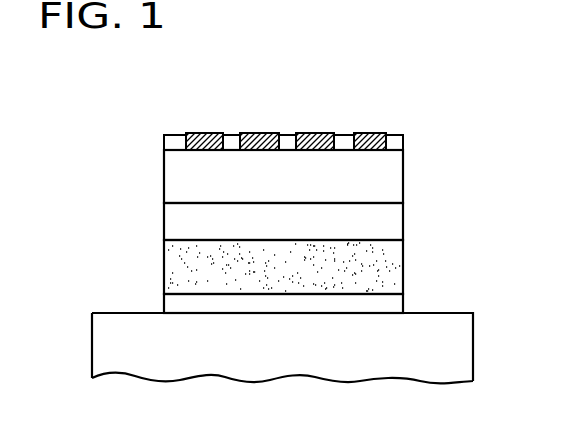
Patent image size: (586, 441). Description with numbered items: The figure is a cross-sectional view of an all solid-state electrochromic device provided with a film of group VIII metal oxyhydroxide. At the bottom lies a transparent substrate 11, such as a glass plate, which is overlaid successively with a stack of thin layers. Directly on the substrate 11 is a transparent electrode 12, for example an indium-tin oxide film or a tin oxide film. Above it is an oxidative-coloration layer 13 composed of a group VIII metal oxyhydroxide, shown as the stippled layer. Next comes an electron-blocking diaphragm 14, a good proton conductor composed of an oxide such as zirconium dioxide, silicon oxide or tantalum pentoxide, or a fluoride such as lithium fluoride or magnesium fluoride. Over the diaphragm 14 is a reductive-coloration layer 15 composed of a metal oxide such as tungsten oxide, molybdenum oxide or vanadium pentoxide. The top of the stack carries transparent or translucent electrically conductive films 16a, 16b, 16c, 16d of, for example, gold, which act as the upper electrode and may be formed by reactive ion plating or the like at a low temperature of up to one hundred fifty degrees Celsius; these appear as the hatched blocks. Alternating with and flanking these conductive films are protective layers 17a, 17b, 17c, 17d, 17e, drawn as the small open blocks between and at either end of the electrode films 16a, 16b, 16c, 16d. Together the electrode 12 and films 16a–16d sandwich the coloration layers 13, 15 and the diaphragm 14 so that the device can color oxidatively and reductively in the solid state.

The transparent substrate 11 is at (473, 358).
The transparent electrode 12 is at (403, 302).
The oxidative-coloration layer 13 is at (403, 269).
The electron-blocking diaphragm 14 is at (403, 228).
The reductive-coloration layer 15 is at (403, 193).
The electrically conductive film 16a is at (207, 133).
The electrically conductive film 16b is at (262, 133).
The electrically conductive film 16c is at (315, 133).
The electrically conductive film 16d is at (372, 133).
The protective layer 17a is at (175, 135).
The protective layer 17b is at (233, 135).
The protective layer 17c is at (290, 135).
The protective layer 17d is at (343, 135).
The protective layer 17e is at (398, 135).